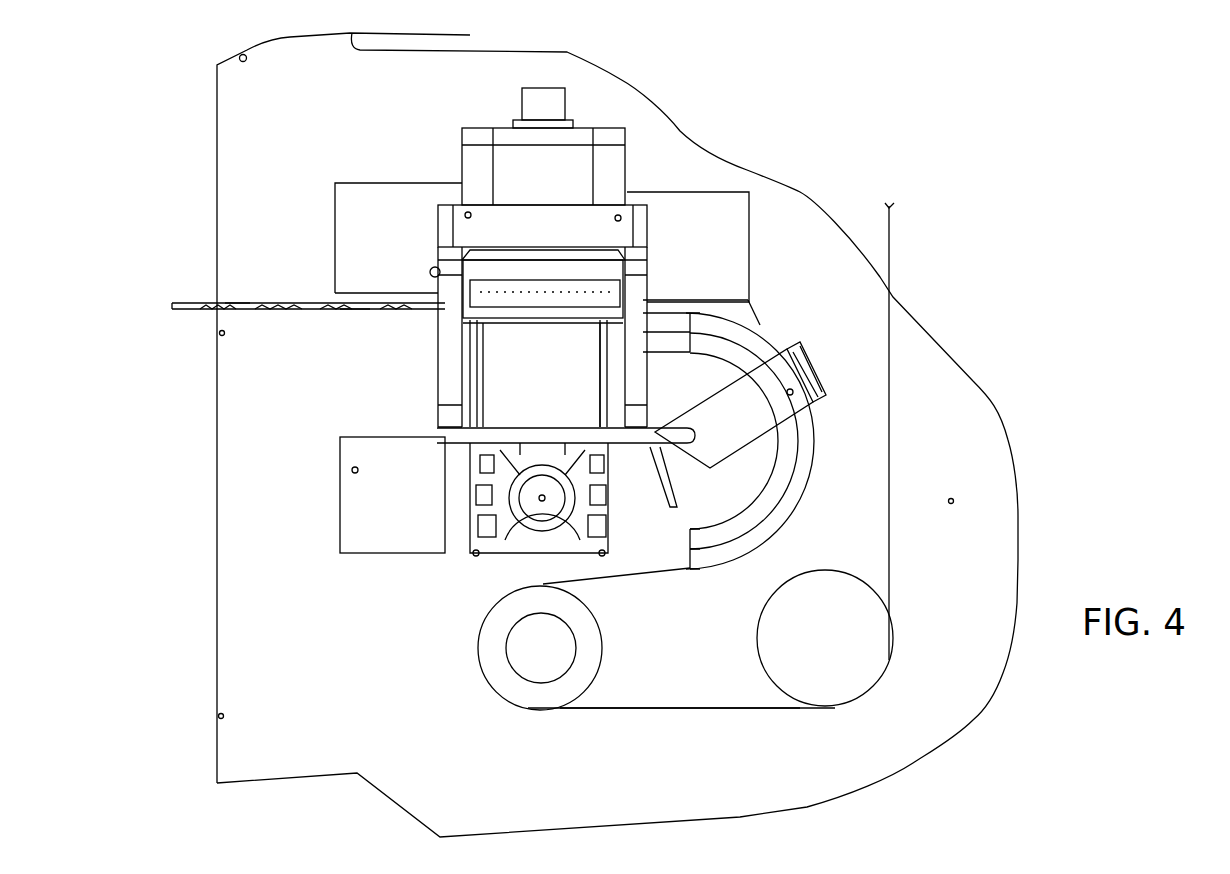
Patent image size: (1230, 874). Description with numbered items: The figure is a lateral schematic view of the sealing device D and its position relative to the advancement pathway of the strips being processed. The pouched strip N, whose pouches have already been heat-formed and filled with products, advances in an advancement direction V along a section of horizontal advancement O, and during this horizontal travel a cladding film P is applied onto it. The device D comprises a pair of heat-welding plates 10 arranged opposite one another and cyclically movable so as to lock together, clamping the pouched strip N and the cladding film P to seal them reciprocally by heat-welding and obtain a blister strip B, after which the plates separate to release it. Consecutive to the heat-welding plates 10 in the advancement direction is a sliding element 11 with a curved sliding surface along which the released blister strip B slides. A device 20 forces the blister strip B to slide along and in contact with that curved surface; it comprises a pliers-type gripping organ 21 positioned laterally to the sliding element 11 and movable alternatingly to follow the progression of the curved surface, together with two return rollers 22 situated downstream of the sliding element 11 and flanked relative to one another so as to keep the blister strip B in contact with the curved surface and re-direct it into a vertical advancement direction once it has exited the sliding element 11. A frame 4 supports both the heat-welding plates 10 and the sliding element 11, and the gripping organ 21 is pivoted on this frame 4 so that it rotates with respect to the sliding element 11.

The sealing device D is at (694, 185).
The sliding element 11 is at (752, 305).
The cladding film P is at (190, 298).
The advancement direction V is at (183, 324).
The section of horizontal advancement O is at (354, 312).
The pouched strip N is at (238, 307).
The pair of heat-welding plates 10 is at (498, 323).
The frame 4 is at (483, 436).
The gripping organ 21 is at (722, 436).
The device for forcing the blister strip 20 is at (714, 473).
The return roller 22 is at (530, 697).
The blister strip B is at (670, 573).